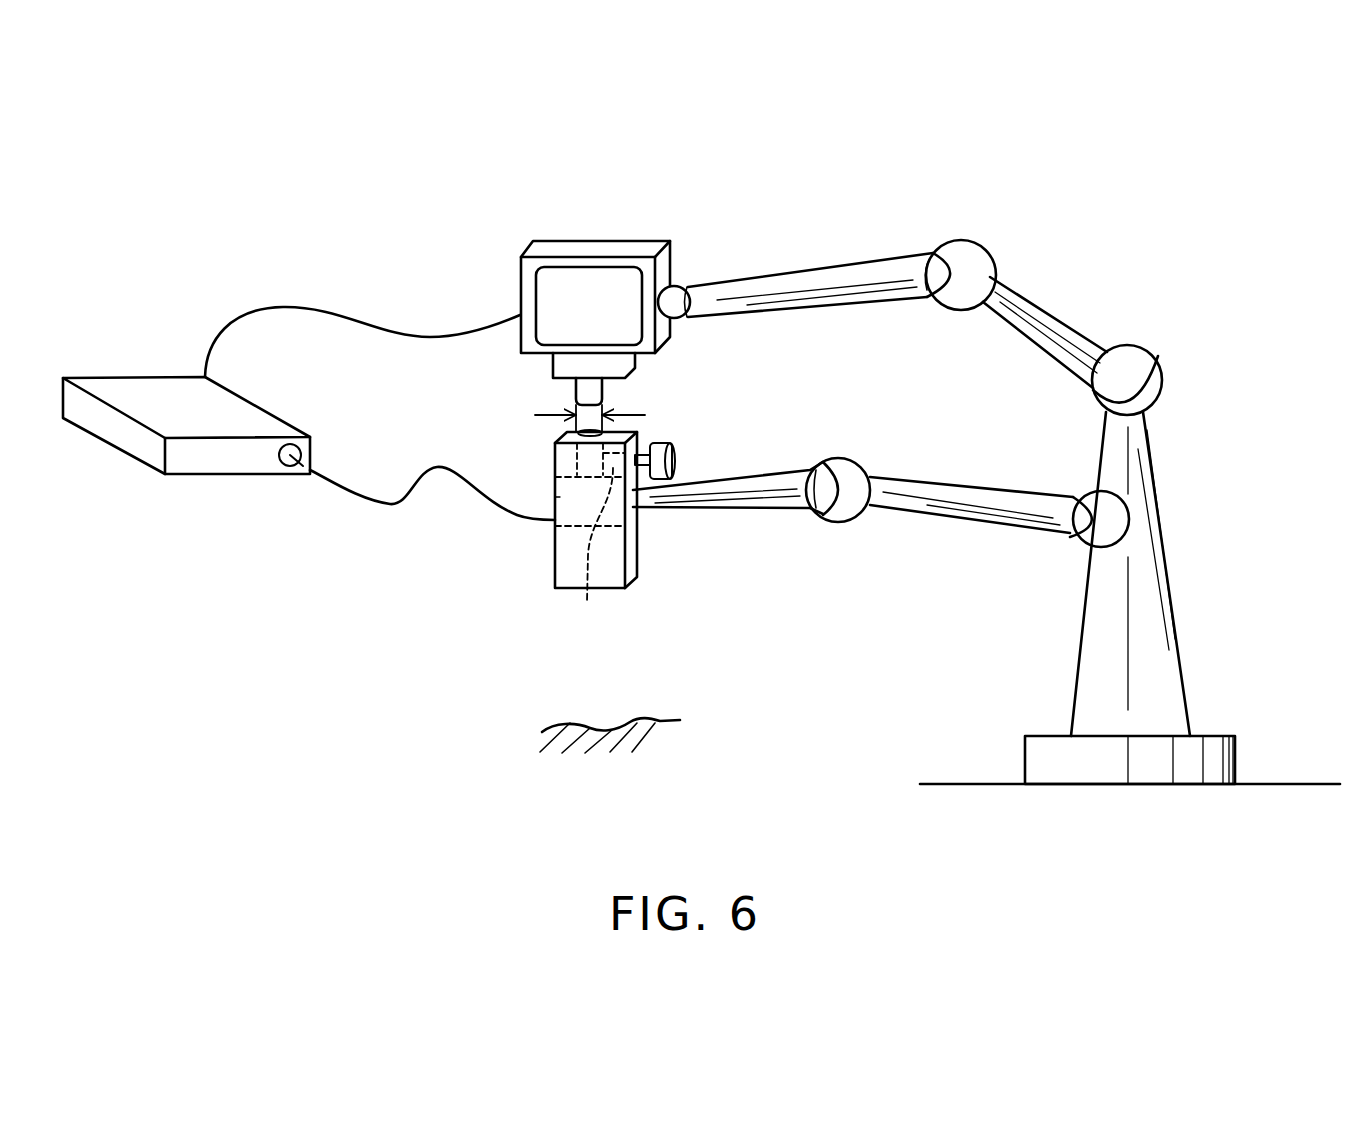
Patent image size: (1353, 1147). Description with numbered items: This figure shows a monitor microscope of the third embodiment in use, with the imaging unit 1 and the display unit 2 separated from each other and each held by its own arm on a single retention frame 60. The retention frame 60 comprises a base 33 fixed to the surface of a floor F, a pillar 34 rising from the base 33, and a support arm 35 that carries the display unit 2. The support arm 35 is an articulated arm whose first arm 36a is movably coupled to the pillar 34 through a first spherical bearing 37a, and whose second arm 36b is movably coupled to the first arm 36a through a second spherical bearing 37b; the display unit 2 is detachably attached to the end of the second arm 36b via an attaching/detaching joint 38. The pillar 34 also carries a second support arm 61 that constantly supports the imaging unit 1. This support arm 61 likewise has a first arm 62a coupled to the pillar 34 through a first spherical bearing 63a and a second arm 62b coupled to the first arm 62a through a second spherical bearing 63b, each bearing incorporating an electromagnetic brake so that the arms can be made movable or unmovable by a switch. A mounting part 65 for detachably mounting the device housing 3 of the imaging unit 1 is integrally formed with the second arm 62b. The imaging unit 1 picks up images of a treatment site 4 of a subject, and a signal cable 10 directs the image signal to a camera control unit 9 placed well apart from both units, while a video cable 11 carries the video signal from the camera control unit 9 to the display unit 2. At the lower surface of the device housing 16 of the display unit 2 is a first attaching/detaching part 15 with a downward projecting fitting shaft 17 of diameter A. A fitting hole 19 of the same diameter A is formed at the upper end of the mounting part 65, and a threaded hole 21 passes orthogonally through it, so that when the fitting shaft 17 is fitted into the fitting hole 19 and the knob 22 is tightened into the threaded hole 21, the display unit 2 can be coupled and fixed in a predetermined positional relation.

The imaging unit 1 is at (605, 531).
The display unit 2 is at (599, 288).
The device housing 3 is at (555, 572).
The treatment site 4 is at (577, 723).
The camera control unit 9 is at (240, 475).
The signal cable 10 is at (390, 507).
The video cable 11 is at (352, 317).
The first attaching/detaching part 15 is at (635, 360).
The device housing 16 is at (622, 241).
The fitting shaft 17 is at (576, 392).
The fitting hole 19 is at (573, 462).
The threaded hole 21 is at (593, 553).
The knob 22 is at (678, 461).
The base 33 is at (1223, 736).
The pillar 34 is at (1160, 607).
The support arm 35 is at (908, 256).
The first arm 36a is at (1045, 318).
The second arm 36b is at (847, 277).
The first spherical bearing 37a is at (1157, 383).
The second spherical bearing 37b is at (963, 255).
The attaching/detaching joint 38 is at (686, 287).
The retention frame 60 is at (1143, 516).
The support arm 61 is at (947, 510).
The first arm 62a is at (975, 495).
The second arm 62b is at (770, 478).
The first spherical bearing 63a is at (1166, 525).
The second spherical bearing 63b is at (843, 470).
The mounting part 65 is at (555, 497).
The diameter A is at (600, 415).
The floor F is at (1283, 782).